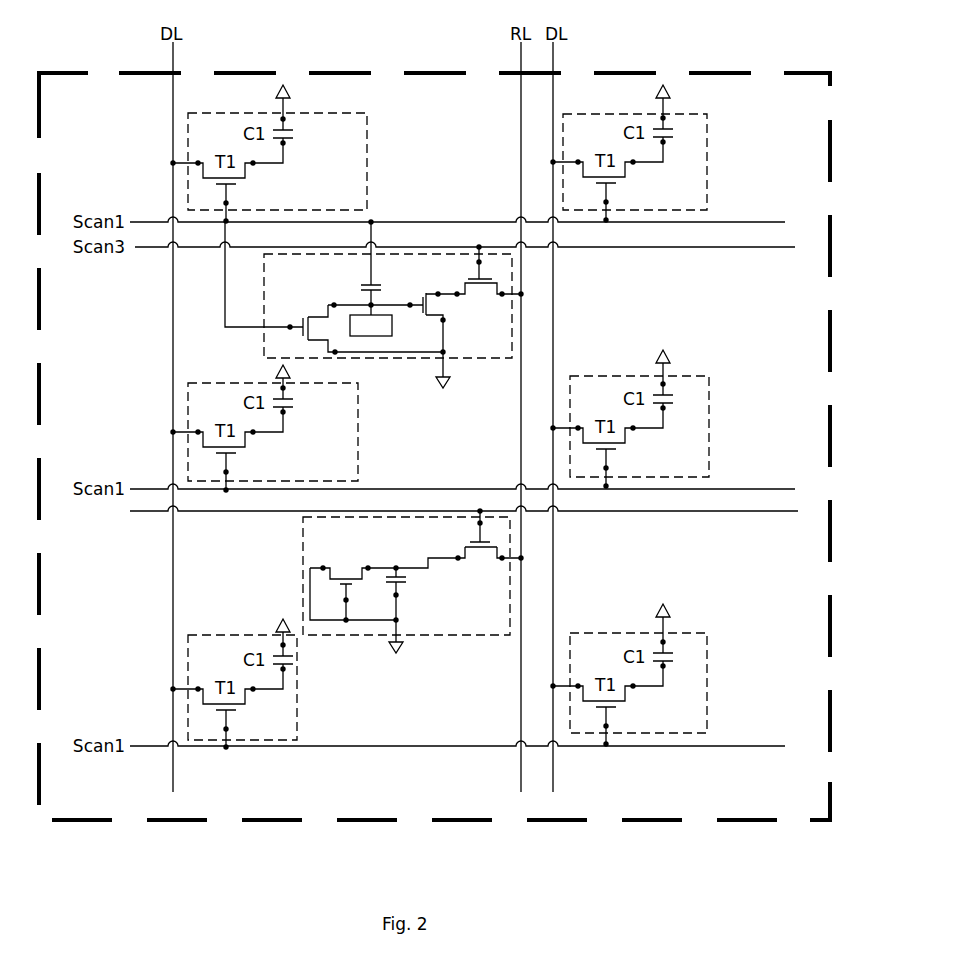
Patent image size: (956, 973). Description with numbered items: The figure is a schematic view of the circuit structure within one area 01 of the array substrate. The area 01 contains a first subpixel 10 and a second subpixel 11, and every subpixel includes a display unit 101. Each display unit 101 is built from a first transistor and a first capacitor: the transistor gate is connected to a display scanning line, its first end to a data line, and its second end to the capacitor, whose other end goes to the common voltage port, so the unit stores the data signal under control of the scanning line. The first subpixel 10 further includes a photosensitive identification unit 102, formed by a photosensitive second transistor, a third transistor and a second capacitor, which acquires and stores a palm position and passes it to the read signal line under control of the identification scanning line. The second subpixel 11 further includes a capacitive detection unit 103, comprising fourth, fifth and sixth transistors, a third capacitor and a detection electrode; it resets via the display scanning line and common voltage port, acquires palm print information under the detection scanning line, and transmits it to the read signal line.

The area 01 is at (268, 73).
The first subpixel 10 is at (192, 558).
The second subpixel 11 is at (200, 302).
The display unit 101 is at (198, 128).
The photosensitive identification unit 102 is at (447, 617).
The capacitive detection unit 103 is at (468, 347).